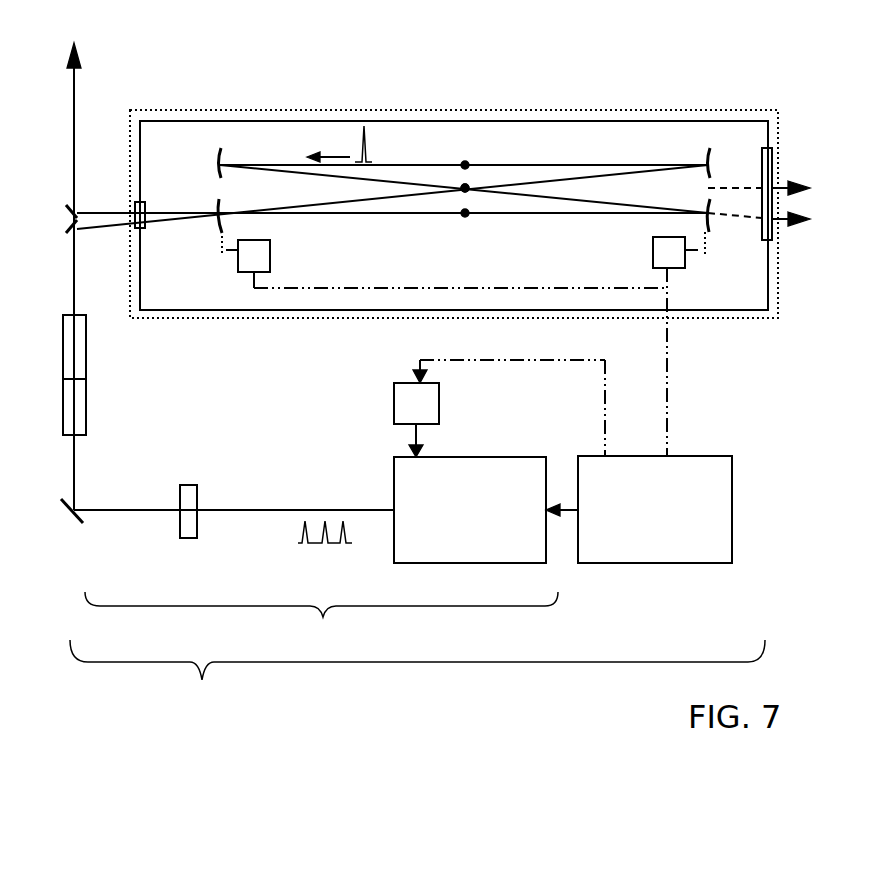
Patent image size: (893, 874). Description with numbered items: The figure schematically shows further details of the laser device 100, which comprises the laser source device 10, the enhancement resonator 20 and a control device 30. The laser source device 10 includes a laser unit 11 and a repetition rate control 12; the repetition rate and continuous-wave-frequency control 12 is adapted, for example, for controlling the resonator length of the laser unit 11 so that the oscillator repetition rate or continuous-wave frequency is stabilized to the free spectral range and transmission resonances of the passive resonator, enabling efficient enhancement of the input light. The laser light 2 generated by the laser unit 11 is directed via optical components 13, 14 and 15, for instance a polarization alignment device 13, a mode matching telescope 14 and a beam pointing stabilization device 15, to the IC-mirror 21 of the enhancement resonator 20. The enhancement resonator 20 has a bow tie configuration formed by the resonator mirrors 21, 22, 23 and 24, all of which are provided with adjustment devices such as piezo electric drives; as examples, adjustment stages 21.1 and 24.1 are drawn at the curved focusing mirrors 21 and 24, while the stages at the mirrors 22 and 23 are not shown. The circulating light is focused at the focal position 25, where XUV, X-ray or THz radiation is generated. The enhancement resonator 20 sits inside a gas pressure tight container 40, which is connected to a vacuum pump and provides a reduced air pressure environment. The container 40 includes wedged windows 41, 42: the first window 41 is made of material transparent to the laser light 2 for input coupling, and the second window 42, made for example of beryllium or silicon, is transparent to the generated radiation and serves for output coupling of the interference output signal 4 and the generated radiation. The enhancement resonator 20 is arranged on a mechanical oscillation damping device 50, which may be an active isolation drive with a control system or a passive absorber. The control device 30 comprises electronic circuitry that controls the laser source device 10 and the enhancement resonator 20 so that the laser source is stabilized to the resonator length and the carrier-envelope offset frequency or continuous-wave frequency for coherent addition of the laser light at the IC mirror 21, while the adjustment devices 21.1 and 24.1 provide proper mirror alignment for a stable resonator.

The laser light 2 is at (322, 545).
The interference output signal 4 is at (74, 112).
The laser source device 10 is at (338, 648).
The laser unit 11 is at (403, 483).
The repetition rate control 12 is at (403, 392).
The polarization alignment device 13 is at (193, 520).
The mode matching telescope 14 is at (77, 425).
The beam pointing stabilization device 15 is at (75, 367).
The enhancement resonator 20 is at (483, 251).
The IC-mirror 21 is at (222, 229).
The adjustment stage 21.1 is at (255, 256).
The resonator mirror 22 is at (708, 150).
The resonator mirror 23 is at (218, 173).
The curved focusing mirror 24 is at (712, 224).
The adjustment stage 24.1 is at (672, 255).
The focal position 25 is at (470, 182).
The control device 30 is at (716, 518).
The gas pressure tight container 40 is at (490, 121).
The first window 41 is at (136, 228).
The second window 42 is at (771, 240).
The mechanical oscillation damping device 50 is at (368, 110).
The laser device 100 is at (220, 713).